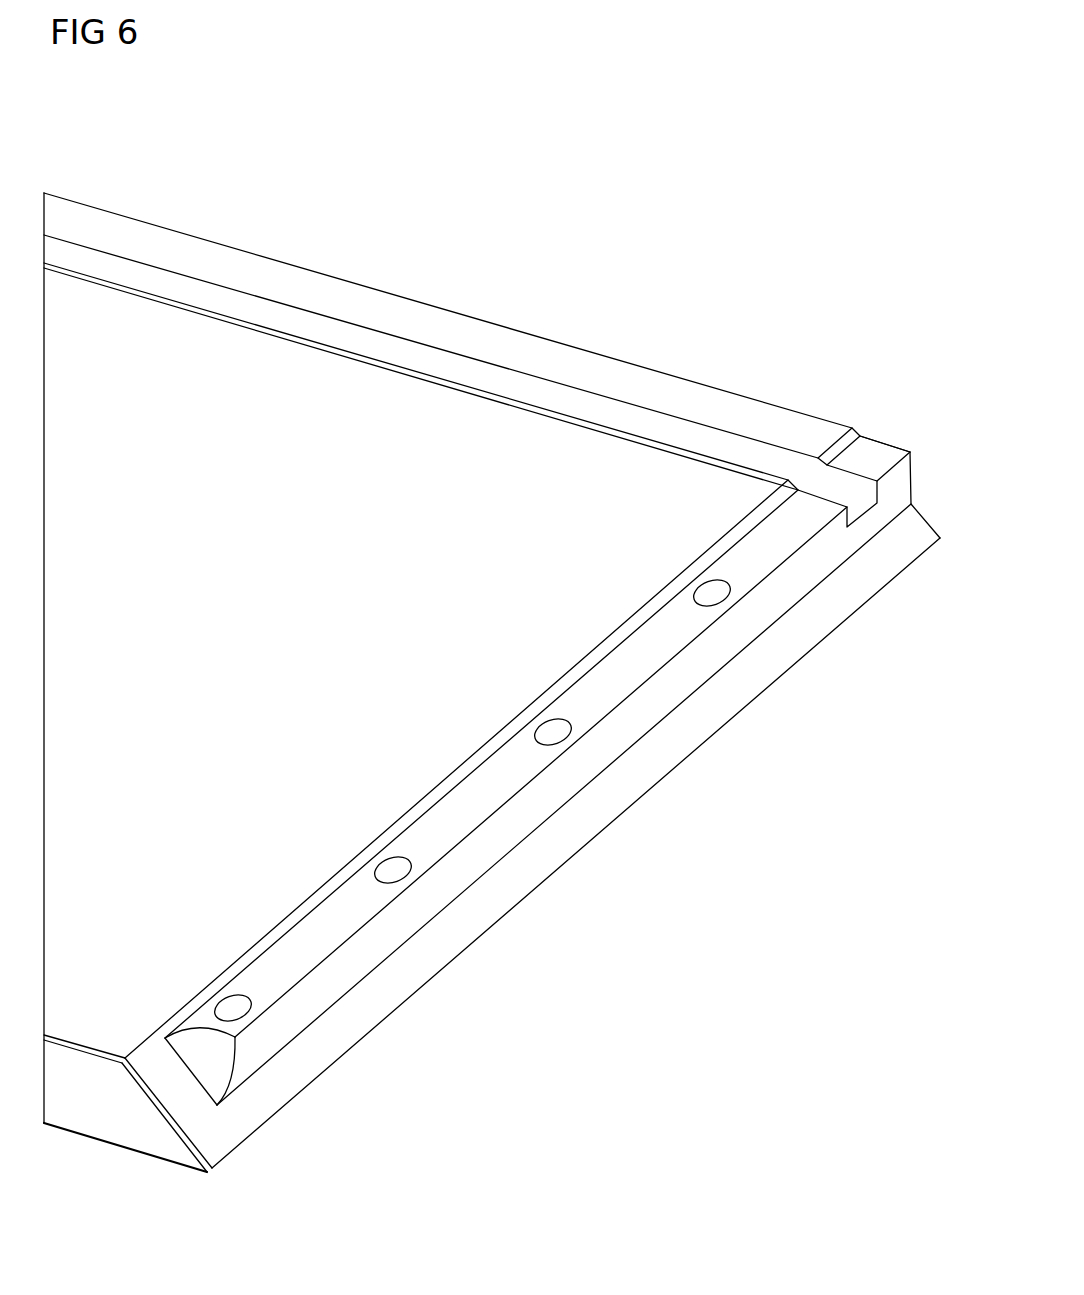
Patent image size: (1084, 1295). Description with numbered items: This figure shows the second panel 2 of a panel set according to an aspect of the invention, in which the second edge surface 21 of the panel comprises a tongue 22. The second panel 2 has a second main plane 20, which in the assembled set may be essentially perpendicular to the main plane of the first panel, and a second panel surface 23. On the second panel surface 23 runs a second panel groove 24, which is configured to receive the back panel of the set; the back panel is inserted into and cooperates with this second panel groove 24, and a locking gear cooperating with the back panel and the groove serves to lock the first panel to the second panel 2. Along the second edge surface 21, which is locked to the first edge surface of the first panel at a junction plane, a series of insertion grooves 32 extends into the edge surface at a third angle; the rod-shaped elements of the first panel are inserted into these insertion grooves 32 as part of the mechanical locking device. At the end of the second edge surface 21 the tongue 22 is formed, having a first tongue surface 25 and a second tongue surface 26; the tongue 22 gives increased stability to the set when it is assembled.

The second panel 2 is at (567, 343).
The second main plane 20 is at (232, 363).
The second edge surface 21 is at (218, 1123).
The tongue 22 is at (800, 548).
The second panel surface 23 is at (135, 336).
The second panel groove 24 is at (647, 433).
The first tongue surface 25 is at (867, 457).
The second tongue surface 26 is at (893, 492).
The insertion groove 32 is at (555, 732).